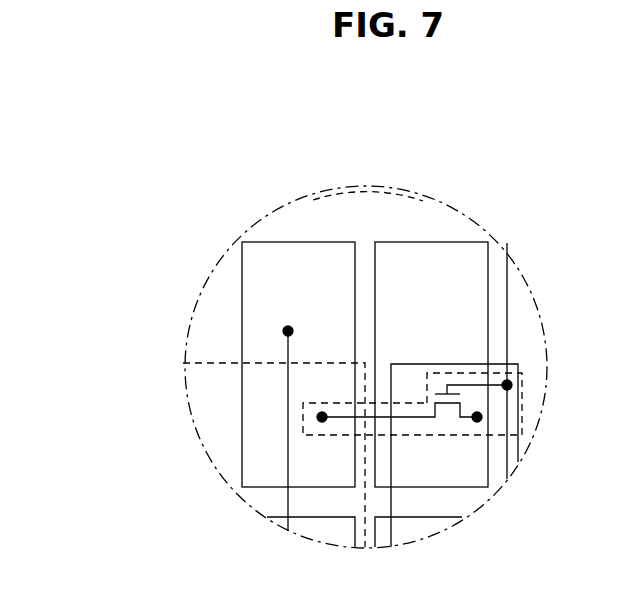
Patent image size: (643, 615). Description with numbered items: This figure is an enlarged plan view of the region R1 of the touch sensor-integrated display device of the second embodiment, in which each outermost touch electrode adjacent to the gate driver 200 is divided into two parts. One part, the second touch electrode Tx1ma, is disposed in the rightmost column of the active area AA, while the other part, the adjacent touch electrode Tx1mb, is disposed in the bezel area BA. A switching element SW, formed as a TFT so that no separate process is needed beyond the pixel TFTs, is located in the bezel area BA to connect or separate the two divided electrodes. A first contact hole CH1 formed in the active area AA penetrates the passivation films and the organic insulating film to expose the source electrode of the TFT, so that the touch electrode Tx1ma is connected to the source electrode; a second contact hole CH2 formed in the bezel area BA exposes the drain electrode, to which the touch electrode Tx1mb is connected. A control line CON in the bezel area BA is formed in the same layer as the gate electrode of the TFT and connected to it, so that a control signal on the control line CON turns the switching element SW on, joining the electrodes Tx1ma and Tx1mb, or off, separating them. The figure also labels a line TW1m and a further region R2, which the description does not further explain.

The region R1 is at (152, 108).
The second touch electrode Tx1ma is at (288, 265).
The (10-1)-th touch electrode Tx1mb is at (440, 265).
The bezel area BA is at (366, 200).
The active area AA is at (225, 360).
The control line CON is at (508, 248).
The gate driver 200 is at (518, 365).
The switching element SW is at (435, 378).
The first contact hole CH1 is at (322, 425).
The second contact hole CH2 is at (477, 425).
The first transmit wire TW1m is at (288, 466).
The second region R2 is at (420, 438).